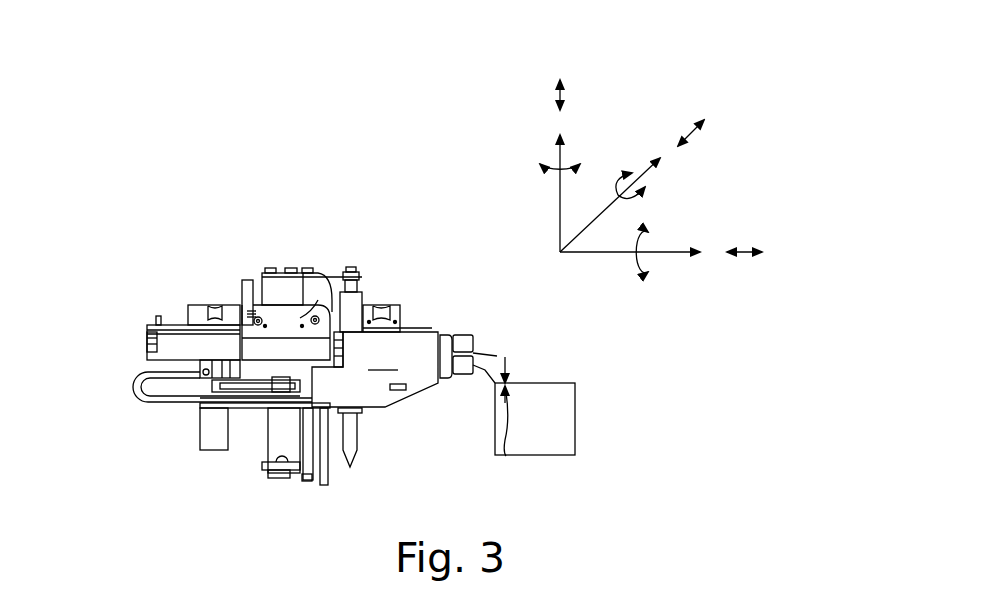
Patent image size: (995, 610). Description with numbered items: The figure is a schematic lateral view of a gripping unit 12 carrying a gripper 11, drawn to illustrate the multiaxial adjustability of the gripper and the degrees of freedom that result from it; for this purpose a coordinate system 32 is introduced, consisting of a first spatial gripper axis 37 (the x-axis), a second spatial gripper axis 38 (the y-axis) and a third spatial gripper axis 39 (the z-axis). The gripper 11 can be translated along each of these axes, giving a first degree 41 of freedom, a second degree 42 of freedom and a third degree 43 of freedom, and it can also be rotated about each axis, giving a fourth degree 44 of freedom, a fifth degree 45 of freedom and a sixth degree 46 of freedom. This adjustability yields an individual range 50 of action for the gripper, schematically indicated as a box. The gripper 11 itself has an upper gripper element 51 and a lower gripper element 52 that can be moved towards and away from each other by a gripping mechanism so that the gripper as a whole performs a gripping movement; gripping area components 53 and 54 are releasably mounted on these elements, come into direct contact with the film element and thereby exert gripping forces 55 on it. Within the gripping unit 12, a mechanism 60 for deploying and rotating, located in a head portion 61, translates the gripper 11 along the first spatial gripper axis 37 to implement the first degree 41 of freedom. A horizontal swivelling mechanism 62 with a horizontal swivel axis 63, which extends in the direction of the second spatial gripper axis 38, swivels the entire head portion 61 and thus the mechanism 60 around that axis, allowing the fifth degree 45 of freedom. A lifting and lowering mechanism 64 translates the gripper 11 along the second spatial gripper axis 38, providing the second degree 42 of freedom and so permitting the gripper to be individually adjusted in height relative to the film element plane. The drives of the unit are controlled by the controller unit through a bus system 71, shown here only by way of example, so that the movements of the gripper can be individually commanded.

The gripper 11 is at (457, 320).
The gripping unit 12 is at (280, 228).
The coordinate system 32 is at (593, 194).
The first spatial gripper axis 37 is at (594, 255).
The second spatial gripper axis 38 is at (558, 200).
The third spatial gripper axis 39 is at (585, 225).
The first degree of freedom 41 is at (745, 258).
The second degree of freedom 42 is at (555, 92).
The third degree of freedom 43 is at (698, 138).
The fourth degree of freedom 44 is at (640, 280).
The fifth degree of freedom 45 is at (540, 170).
The sixth degree of freedom 46 is at (618, 178).
The range of action 50 is at (575, 433).
The upper gripper element 51 is at (474, 338).
The lower gripper element 52 is at (448, 381).
The gripping area component 53 is at (495, 355).
The gripping area component 54 is at (466, 376).
The gripping forces 55 is at (506, 456).
The mechanism for deploying and rotating 60 is at (375, 356).
The head portion 61 is at (404, 445).
The horizontal swivelling mechanism 62 is at (352, 255).
The horizontal swivel axis 63 is at (353, 470).
The lifting and lowering mechanism 64 is at (262, 520).
The bus system 71 is at (140, 398).